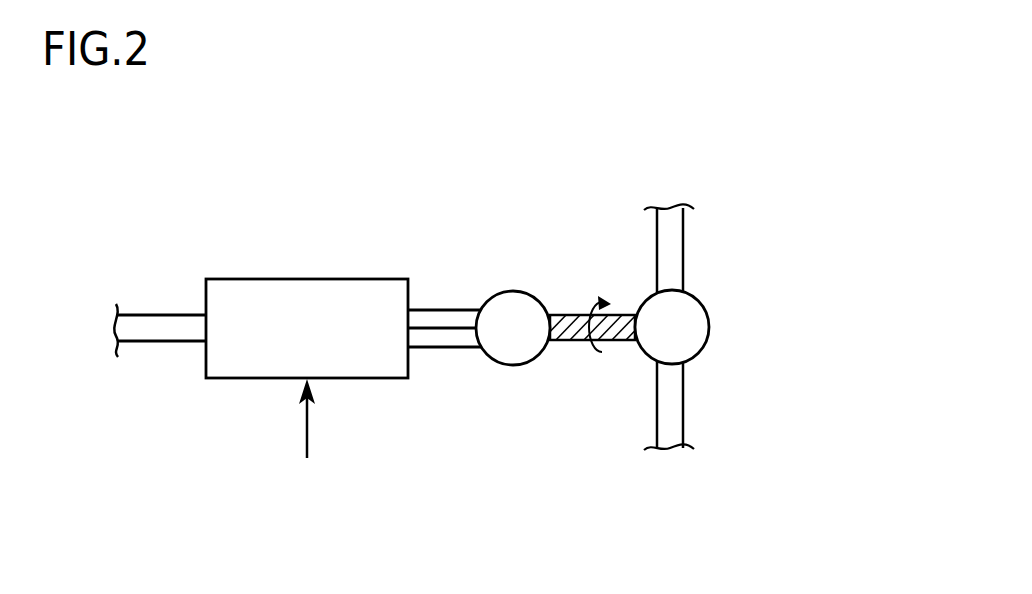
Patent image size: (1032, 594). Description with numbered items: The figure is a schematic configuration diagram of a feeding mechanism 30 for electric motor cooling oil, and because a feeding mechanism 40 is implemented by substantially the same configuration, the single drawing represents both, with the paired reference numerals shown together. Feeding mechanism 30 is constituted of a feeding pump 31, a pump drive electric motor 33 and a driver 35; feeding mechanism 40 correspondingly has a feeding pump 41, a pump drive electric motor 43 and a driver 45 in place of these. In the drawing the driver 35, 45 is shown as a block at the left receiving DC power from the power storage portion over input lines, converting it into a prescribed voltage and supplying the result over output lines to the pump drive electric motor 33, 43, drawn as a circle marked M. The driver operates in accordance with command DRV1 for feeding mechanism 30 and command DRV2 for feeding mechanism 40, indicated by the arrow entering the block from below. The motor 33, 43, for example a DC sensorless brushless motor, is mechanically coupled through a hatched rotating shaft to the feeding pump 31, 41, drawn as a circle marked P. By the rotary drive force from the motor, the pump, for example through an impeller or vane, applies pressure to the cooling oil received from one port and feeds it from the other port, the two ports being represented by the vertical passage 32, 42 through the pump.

The feeding mechanism 30 is at (523, 290).
The feeding mechanism 40 is at (932, 113).
The feeding pump 31 is at (734, 327).
The feeding pump 41 is at (709, 328).
The hydraulic line 32 is at (727, 318).
The hydraulic line 42 is at (712, 249).
The pump drive electric motor 33 is at (548, 307).
The pump drive electric motor 43 is at (511, 292).
The driver 35 is at (315, 307).
The driver 45 is at (313, 278).